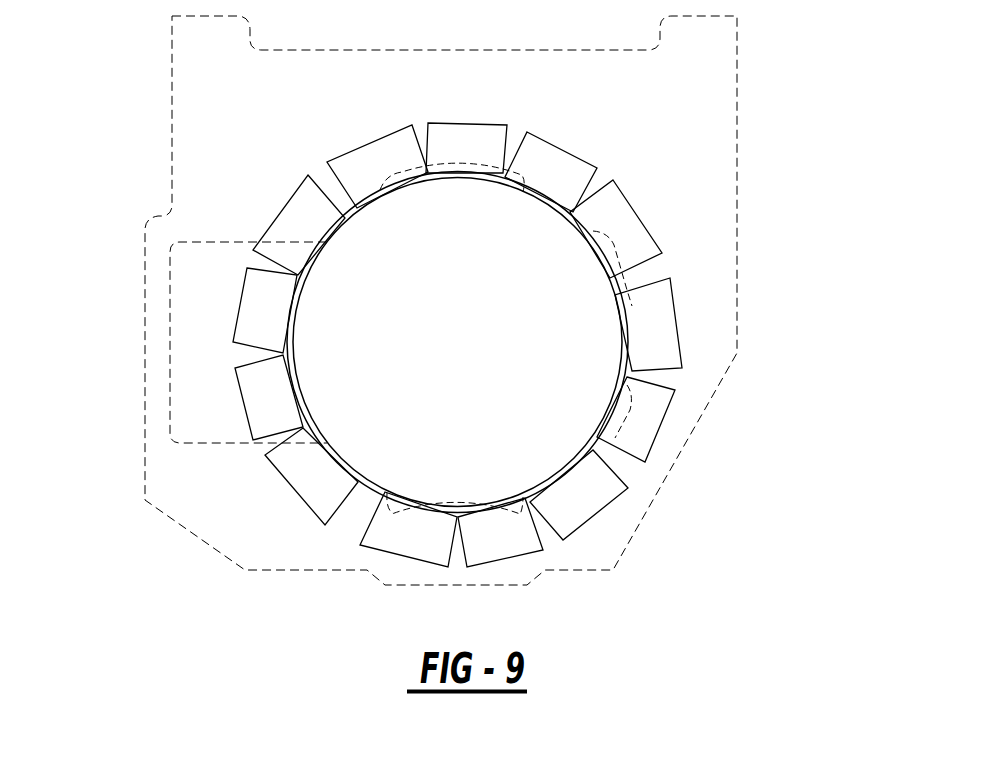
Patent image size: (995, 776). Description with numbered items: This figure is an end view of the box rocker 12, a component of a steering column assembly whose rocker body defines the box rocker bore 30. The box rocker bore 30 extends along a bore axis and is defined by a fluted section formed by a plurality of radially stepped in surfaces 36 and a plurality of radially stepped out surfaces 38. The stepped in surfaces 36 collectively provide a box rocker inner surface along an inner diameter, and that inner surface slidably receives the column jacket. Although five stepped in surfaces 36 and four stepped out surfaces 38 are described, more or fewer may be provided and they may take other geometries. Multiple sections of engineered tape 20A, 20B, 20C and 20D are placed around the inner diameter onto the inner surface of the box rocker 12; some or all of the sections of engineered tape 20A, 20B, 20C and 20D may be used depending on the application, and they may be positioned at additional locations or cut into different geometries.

The box rocker 12 is at (212, 163).
The section of engineered tape 20A is at (562, 160).
The section of engineered tape 20B is at (255, 390).
The section of engineered tape 20C is at (583, 513).
The section of engineered tape 20D is at (663, 333).
The box rocker bore 30 is at (470, 418).
The radially stepped in surfaces 36 is at (548, 207).
The radially stepped out surfaces 38 is at (460, 162).